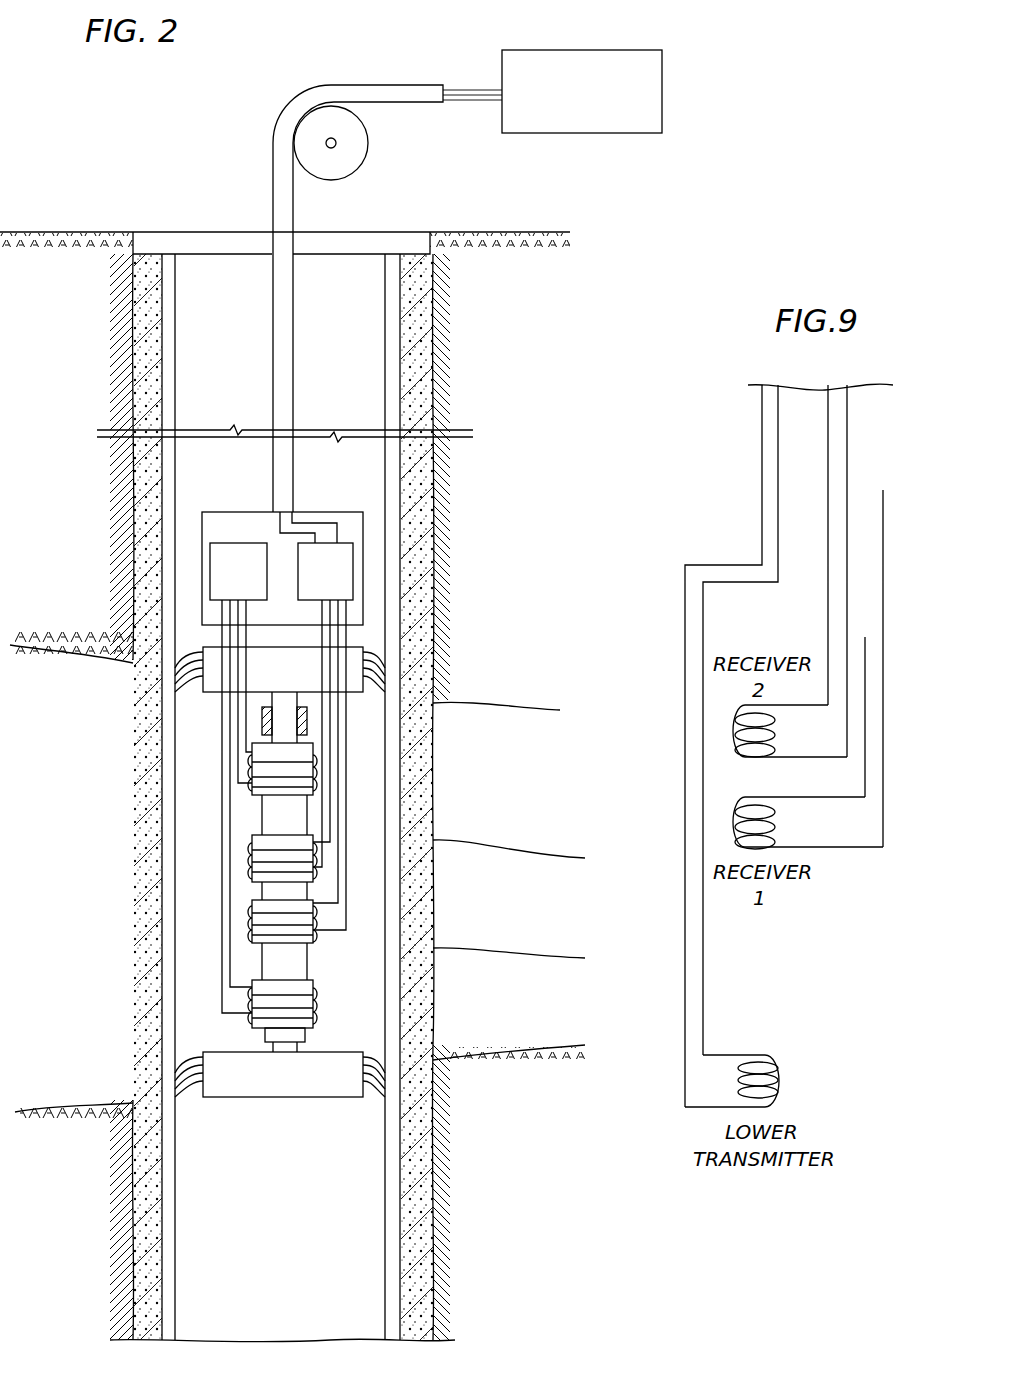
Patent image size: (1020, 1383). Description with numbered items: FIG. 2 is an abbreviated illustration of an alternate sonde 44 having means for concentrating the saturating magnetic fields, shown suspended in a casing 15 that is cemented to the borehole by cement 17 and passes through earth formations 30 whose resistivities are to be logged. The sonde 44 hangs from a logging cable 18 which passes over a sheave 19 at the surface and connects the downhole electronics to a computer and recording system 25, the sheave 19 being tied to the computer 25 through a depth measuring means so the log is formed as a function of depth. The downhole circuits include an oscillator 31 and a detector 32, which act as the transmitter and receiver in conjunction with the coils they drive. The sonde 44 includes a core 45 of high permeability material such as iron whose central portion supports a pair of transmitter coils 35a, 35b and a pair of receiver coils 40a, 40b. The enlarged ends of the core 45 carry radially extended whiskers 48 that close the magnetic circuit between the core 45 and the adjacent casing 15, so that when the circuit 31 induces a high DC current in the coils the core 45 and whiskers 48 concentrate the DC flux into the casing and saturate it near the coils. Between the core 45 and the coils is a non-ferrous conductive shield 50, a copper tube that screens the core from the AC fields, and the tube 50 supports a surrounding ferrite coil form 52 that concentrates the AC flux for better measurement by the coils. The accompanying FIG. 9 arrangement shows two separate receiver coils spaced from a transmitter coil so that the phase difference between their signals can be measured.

The casing 15 is at (395, 1272).
The cement 17 is at (417, 1167).
The logging cable 18 is at (268, 147).
The sheave 19 is at (368, 160).
The computer and recording system 25 is at (662, 100).
The earth formations 30 is at (524, 362).
The oscillator 31 is at (205, 572).
The detector 32 is at (357, 555).
The transmitter coil 35a is at (222, 757).
The transmitter coil 35b is at (245, 1000).
The receiver coil 40a is at (330, 845).
The receiver coil 40b is at (328, 920).
The sonde 44 is at (120, 696).
The core 45 is at (340, 1060).
The whiskers 48 is at (180, 1072).
The non-ferrous conductive shield 50 is at (308, 963).
The coil form 52 is at (315, 783).